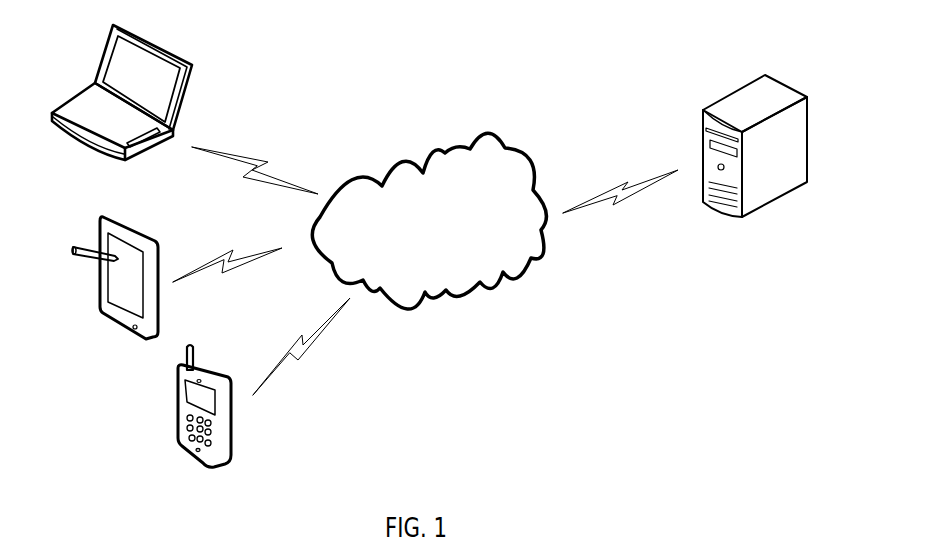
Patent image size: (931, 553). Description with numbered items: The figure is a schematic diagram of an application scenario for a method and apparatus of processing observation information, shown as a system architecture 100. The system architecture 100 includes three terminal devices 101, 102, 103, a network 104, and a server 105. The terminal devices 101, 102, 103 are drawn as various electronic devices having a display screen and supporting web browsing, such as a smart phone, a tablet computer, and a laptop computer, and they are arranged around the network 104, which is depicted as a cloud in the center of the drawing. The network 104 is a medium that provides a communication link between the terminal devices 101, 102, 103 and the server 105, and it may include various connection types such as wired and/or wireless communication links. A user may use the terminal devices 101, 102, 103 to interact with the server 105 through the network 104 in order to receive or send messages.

The system architecture 100 is at (73, 20).
The terminal device 101 is at (185, 411).
The terminal device 102 is at (113, 282).
The terminal device 103 is at (122, 103).
The network 104 is at (429, 221).
The server 105 is at (755, 165).